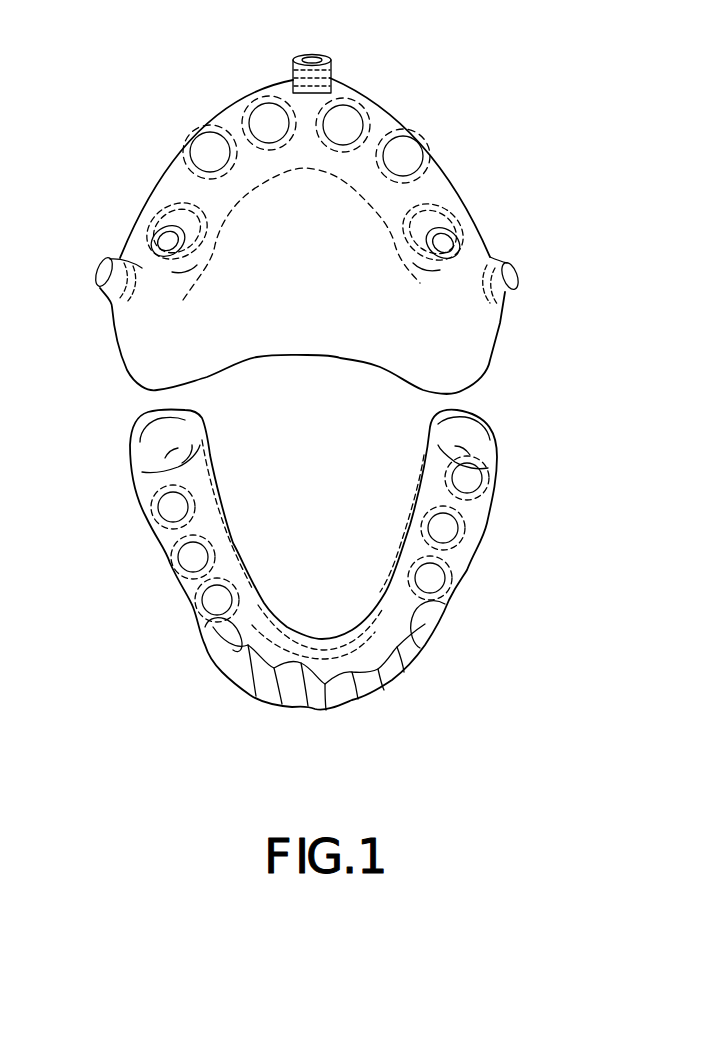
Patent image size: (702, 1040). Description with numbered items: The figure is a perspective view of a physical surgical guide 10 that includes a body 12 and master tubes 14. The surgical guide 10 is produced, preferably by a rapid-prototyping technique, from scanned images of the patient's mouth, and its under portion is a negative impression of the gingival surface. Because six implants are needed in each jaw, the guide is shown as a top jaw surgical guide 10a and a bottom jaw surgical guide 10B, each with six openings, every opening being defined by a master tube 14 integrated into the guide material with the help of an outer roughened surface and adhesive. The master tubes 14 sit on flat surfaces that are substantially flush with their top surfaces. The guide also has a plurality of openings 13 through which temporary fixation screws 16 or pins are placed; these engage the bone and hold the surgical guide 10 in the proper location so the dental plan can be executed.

The surgical guide 10 is at (153, 97).
The top jaw surgical guide 10a is at (390, 117).
The bottom jaw surgical guide 10B is at (490, 460).
The body 12 is at (460, 193).
The openings 13 is at (100, 284).
The master tubes 14 is at (455, 235).
The temporary fixation screws 16 is at (101, 264).